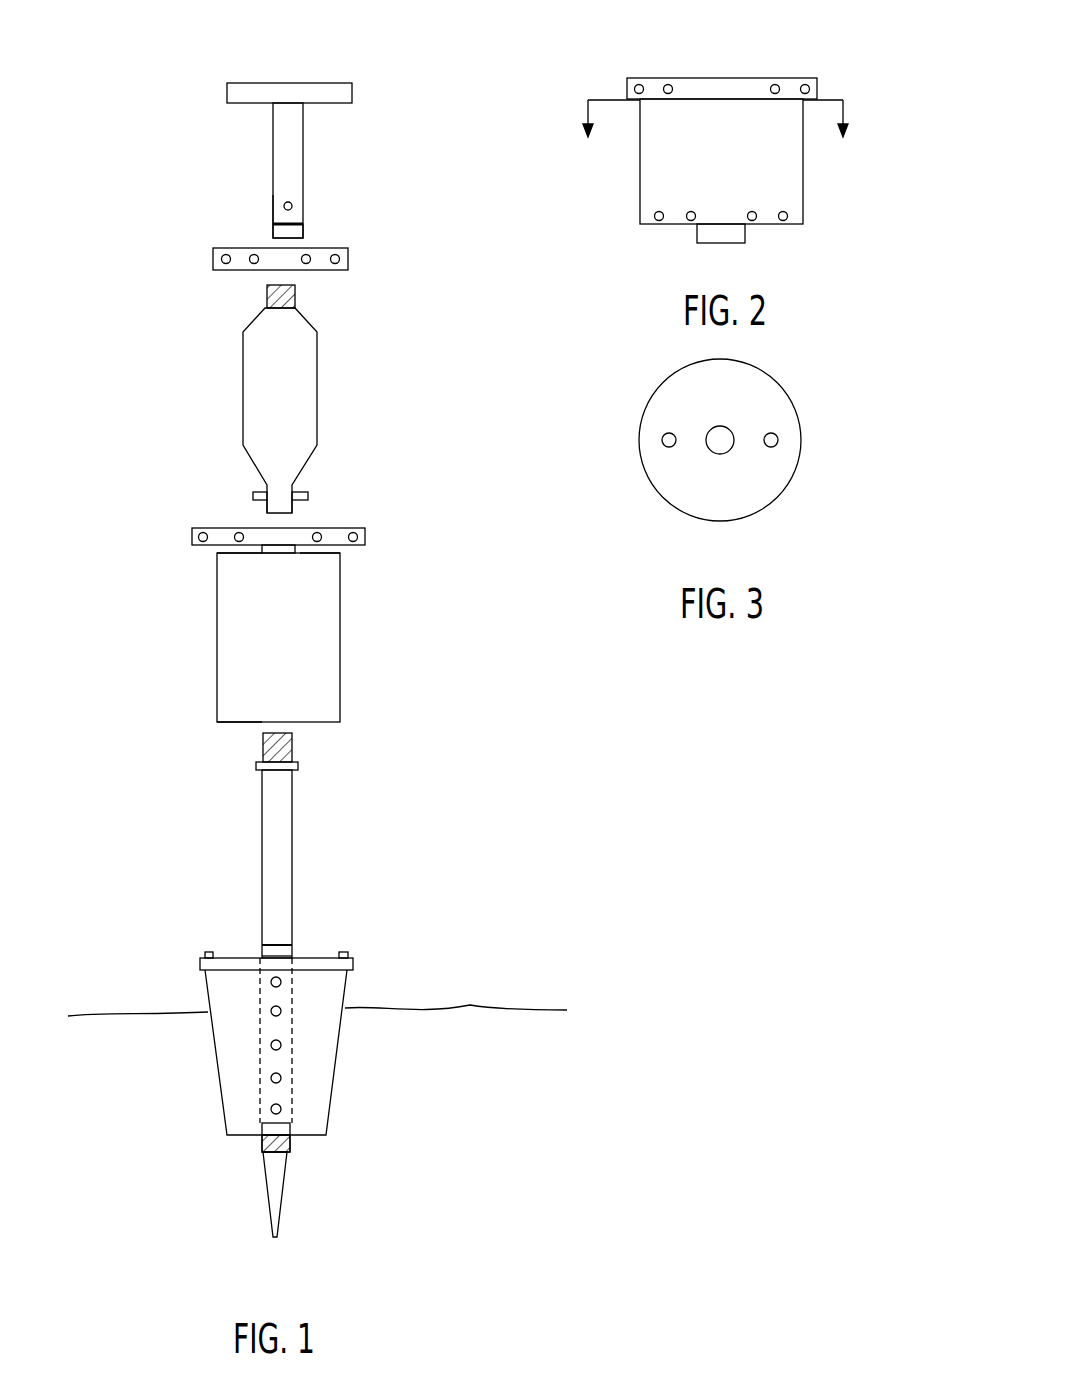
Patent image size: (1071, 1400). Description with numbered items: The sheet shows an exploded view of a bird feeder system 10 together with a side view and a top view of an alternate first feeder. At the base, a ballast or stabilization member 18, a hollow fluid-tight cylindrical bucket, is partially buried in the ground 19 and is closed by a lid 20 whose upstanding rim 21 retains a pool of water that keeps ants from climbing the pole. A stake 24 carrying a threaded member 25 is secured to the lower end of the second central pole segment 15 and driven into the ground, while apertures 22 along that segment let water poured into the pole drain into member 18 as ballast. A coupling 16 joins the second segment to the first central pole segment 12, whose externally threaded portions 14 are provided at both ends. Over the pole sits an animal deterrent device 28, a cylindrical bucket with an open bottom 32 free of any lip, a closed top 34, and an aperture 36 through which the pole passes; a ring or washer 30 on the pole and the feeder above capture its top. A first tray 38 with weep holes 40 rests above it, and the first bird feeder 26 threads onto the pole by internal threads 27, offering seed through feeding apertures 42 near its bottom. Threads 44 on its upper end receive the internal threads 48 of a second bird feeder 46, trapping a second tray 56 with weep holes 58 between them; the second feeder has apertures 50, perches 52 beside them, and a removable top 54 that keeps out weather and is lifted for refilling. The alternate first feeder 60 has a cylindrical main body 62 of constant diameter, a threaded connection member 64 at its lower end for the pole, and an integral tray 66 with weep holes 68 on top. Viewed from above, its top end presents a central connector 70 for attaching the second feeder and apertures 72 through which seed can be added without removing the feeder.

In FIG. 1, the bird feeder system 10 is at (92, 400).
In FIG. 1, the first central pole segment 12 is at (292, 862).
In FIG. 1, the externally threaded portions 14 is at (292, 742).
In FIG. 1, the second central pole segment 15 is at (292, 992).
In FIG. 1, the coupling 16 is at (292, 226).
In FIG. 1, the ballast or stabilization member 18 is at (207, 1000).
In FIG. 1, the ground 19 is at (470, 1005).
In FIG. 1, the lid 20 is at (353, 965).
In FIG. 1, the upstanding rim 21 is at (347, 950).
In FIG. 1, the apertures 22 is at (282, 1045).
In FIG. 1, the stake 24 is at (283, 1200).
In FIG. 1, the threaded member 25 is at (290, 1143).
In FIG. 1, the first bird feeder 26 is at (317, 420).
In FIG. 1, the threads 27 is at (292, 512).
In FIG. 1, the animal deterrent device 28 is at (340, 655).
In FIG. 1, the ring or washer 30 is at (298, 766).
In FIG. 1, the open bottom 32 is at (240, 722).
In FIG. 1, the closed top 34 is at (340, 553).
In FIG. 1, the aperture 36 is at (282, 555).
In FIG. 1, the first tray 38 is at (365, 531).
In FIG. 1, the weep holes 40 is at (203, 533).
In FIG. 1, the feeding tubes or apertures 42 is at (253, 495).
In FIG. 1, the threads 44 is at (295, 293).
In FIG. 1, the second bird feeder 46 is at (303, 176).
In FIG. 1, the internal threads 48 is at (300, 238).
In FIG. 1, the apertures 50 is at (285, 203).
In FIG. 1, the perches 52 is at (275, 208).
In FIG. 1, the removable top 54 is at (352, 93).
In FIG. 1, the second tray 56 is at (348, 259).
In FIG. 1, the weep holes 58 is at (226, 264).
In FIG. 2, the second embodiment of the first bird feeder 60 is at (838, 199).
In FIG. 2, the main body 62 is at (640, 192).
In FIG. 2, the connection member 64 is at (697, 238).
In FIG. 2, the tray 66 is at (650, 86).
In FIG. 2, the weep holes 68 is at (776, 85).
In FIG. 3, the connector 70 is at (733, 432).
In FIG. 3, the apertures 72 is at (662, 440).